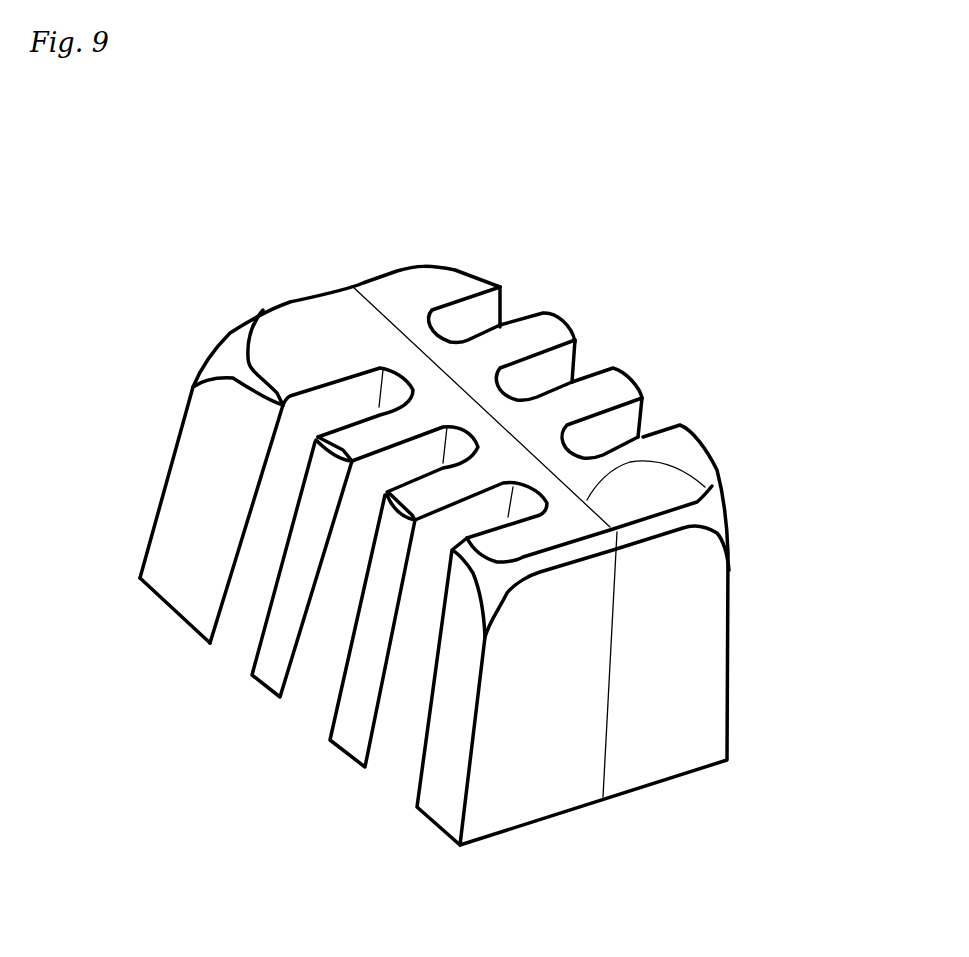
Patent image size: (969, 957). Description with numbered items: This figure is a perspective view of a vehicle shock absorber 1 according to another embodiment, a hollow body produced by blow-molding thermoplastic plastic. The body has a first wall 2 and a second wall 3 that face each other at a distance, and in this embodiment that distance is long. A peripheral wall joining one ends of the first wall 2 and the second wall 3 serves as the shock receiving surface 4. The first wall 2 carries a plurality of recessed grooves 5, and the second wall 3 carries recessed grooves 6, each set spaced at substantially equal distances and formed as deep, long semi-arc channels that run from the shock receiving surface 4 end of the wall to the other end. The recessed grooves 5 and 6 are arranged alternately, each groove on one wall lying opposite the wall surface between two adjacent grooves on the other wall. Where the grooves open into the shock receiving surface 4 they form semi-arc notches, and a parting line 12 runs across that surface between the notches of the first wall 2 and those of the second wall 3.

The vehicle shock absorber 1 is at (730, 360).
The first wall 2 is at (190, 513).
The second wall 3 is at (730, 508).
The shock receiving surface 4 is at (398, 297).
The recessed grooves 5 is at (252, 583).
The recessed grooves 6 is at (533, 377).
The parting line 12 is at (707, 443).